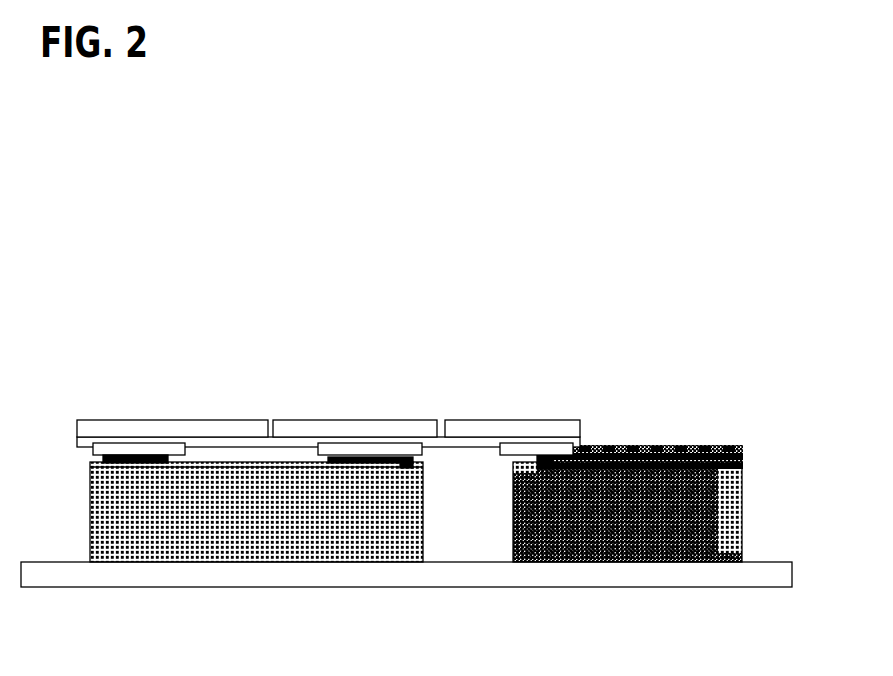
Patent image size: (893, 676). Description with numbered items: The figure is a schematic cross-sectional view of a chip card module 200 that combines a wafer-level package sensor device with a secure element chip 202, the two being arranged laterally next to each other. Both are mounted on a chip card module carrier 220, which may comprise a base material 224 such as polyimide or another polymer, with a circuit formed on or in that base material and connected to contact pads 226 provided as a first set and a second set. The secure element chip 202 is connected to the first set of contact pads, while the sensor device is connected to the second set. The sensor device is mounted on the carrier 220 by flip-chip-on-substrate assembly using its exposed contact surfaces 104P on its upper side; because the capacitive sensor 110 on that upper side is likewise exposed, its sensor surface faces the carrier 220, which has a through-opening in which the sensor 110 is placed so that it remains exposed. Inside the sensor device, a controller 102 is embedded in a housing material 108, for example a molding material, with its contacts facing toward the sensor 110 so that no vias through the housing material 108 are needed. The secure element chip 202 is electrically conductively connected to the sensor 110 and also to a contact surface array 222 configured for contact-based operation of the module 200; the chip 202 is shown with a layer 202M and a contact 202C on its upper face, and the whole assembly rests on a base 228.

The chip card module 200 is at (641, 141).
The chip card module carrier 220 is at (301, 393).
The contact surface array 222 is at (163, 427).
The base material 224 is at (265, 445).
The contact pads 226 is at (297, 426).
The secure element chip 202 is at (278, 535).
The metal layer 202M is at (407, 463).
The contact 202C is at (410, 468).
The exposed contact surfaces 104P is at (578, 452).
The capacitive sensor 110 is at (750, 447).
The housing material 108 is at (618, 530).
The controller 102 is at (762, 528).
The carrier 228 is at (452, 574).